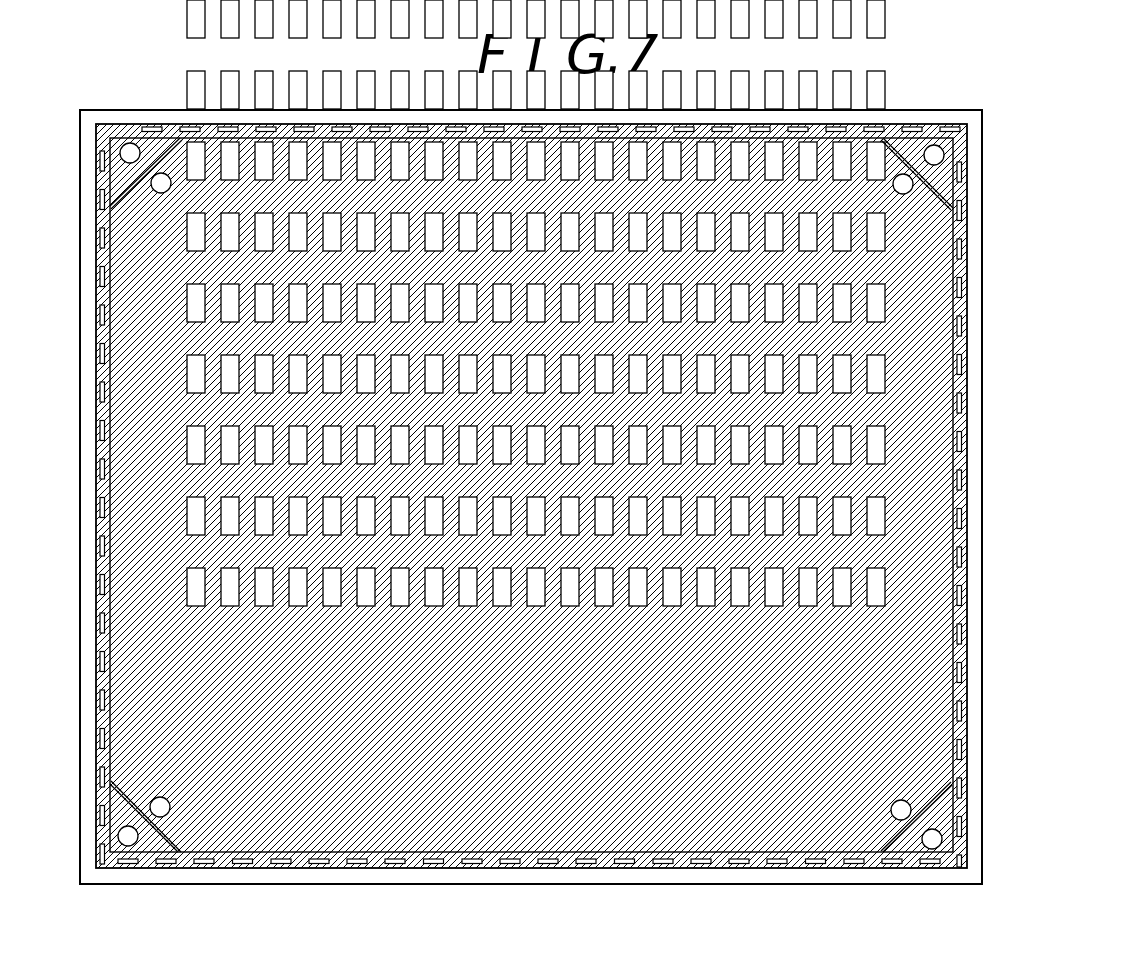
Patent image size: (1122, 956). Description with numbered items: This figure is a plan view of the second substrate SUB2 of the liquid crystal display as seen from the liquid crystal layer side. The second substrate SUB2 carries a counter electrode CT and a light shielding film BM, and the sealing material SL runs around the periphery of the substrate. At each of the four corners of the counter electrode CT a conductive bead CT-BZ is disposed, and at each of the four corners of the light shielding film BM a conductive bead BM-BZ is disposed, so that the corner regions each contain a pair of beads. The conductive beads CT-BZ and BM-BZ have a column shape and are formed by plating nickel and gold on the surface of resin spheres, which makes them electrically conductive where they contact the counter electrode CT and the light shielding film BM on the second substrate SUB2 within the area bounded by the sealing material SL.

The second substrate SUB2 is at (966, 110).
The light shielding film BM is at (958, 194).
The conductive bead BM-BZ is at (966, 158).
The sealing material SL is at (963, 253).
The conductive bead CT-BZ is at (964, 243).
The counter electrode CT is at (964, 333).